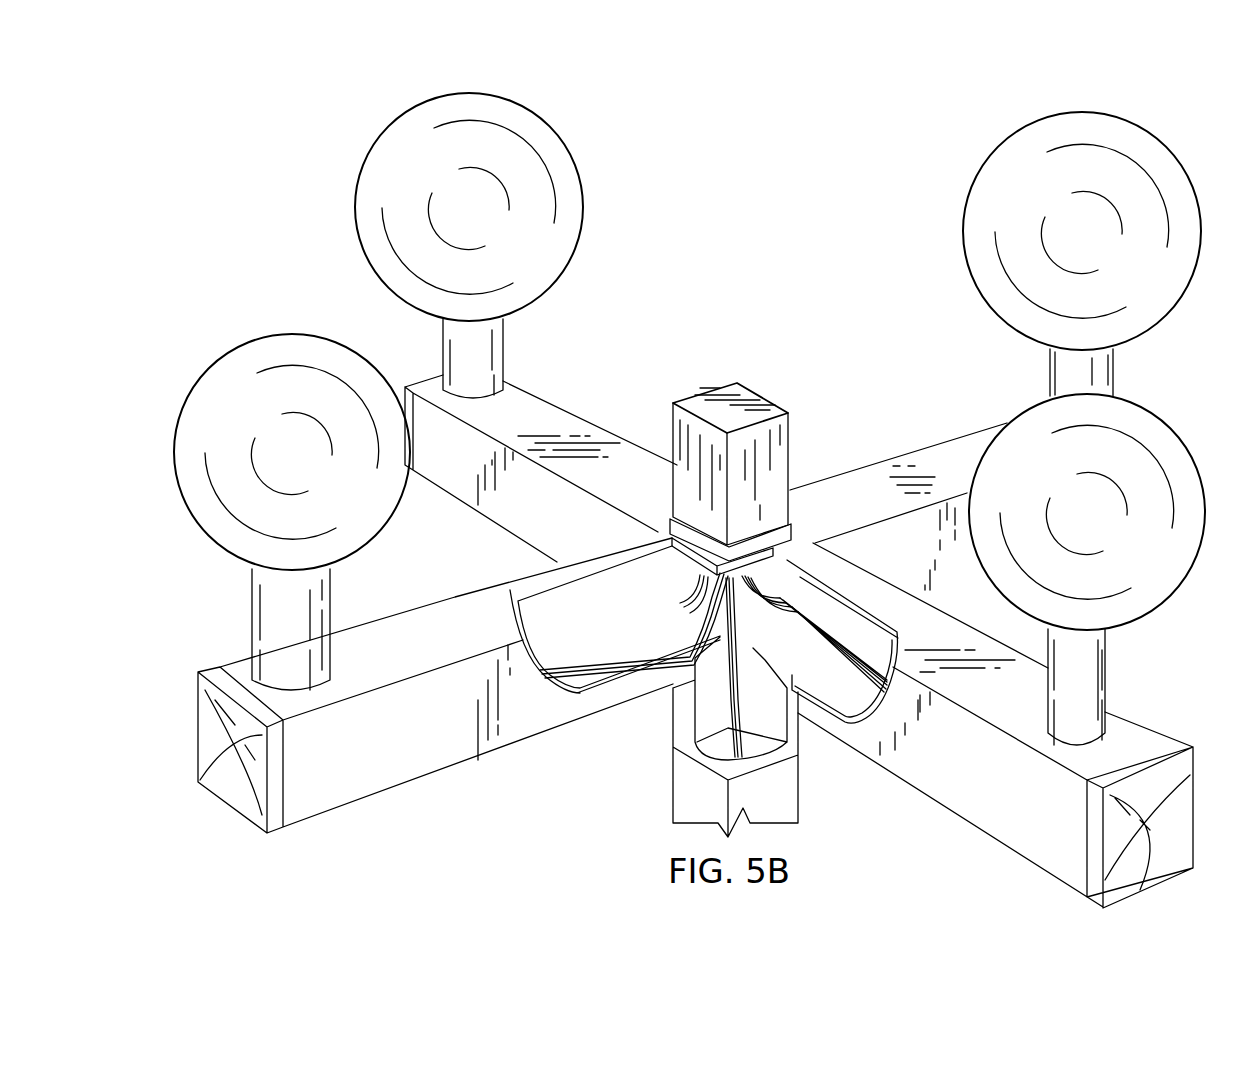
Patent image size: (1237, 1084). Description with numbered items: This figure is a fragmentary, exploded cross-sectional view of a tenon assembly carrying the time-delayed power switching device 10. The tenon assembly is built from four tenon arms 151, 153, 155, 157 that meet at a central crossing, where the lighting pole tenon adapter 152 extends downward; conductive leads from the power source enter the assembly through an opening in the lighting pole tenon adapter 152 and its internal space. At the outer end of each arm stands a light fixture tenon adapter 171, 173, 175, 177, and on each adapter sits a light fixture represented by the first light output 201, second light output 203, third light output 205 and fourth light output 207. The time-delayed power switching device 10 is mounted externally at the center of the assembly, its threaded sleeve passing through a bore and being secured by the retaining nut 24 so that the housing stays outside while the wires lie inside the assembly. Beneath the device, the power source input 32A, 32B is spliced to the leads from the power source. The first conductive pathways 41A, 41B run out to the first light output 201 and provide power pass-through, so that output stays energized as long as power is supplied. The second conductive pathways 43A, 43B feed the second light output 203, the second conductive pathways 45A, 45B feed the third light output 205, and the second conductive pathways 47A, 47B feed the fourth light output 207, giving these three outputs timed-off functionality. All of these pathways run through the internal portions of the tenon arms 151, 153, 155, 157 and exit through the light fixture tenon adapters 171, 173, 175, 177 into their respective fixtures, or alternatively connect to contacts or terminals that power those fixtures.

The time-delayed power switching device 10 is at (795, 378).
The retaining nut 24 is at (748, 572).
The power source input 32A is at (738, 704).
The power source input 32B is at (740, 712).
The first conductive pathway 41A is at (819, 650).
The first conductive pathway 41B is at (852, 675).
The second conductive pathway 43A is at (588, 670).
The second conductive pathway 43B is at (622, 673).
The second conductive pathway 45A is at (695, 585).
The second conductive pathway 45B is at (696, 607).
The second conductive pathway 47A is at (790, 603).
The second conductive pathway 47B is at (805, 620).
The tenon arm 151 is at (953, 765).
The lighting pole tenon adapter 152 is at (673, 735).
The tenon arm 153 is at (531, 700).
The tenon arm 155 is at (527, 505).
The tenon arm 157 is at (960, 567).
The light fixture tenon adapter 171 is at (1110, 672).
The light fixture tenon adapter 173 is at (275, 638).
The light fixture tenon adapter 175 is at (455, 337).
The light fixture tenon adapter 177 is at (1100, 376).
The first light output 201 is at (1150, 587).
The second light output 203 is at (234, 535).
The third light output 205 is at (378, 222).
The fourth light output 207 is at (982, 196).